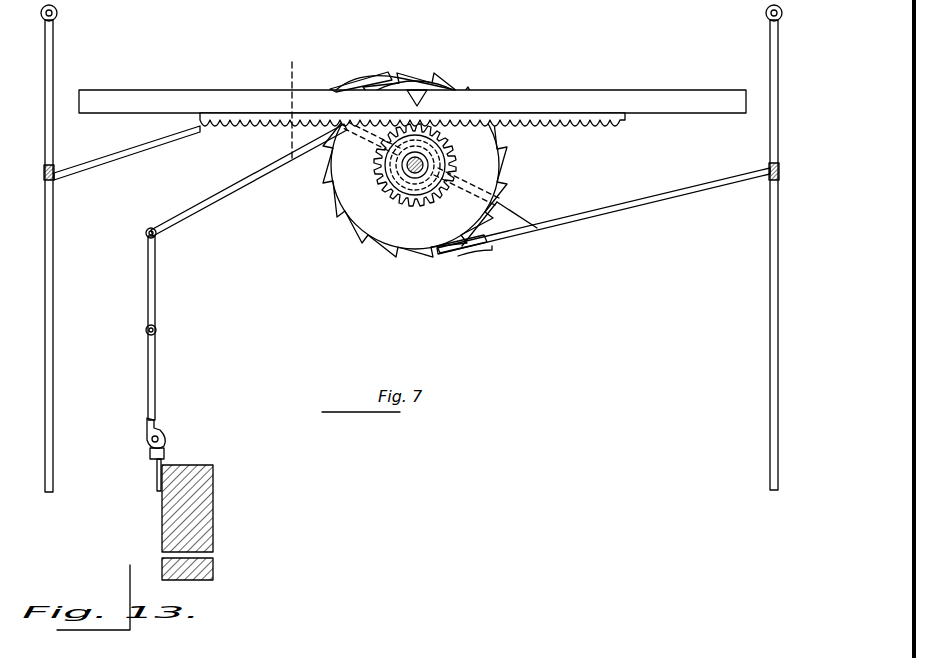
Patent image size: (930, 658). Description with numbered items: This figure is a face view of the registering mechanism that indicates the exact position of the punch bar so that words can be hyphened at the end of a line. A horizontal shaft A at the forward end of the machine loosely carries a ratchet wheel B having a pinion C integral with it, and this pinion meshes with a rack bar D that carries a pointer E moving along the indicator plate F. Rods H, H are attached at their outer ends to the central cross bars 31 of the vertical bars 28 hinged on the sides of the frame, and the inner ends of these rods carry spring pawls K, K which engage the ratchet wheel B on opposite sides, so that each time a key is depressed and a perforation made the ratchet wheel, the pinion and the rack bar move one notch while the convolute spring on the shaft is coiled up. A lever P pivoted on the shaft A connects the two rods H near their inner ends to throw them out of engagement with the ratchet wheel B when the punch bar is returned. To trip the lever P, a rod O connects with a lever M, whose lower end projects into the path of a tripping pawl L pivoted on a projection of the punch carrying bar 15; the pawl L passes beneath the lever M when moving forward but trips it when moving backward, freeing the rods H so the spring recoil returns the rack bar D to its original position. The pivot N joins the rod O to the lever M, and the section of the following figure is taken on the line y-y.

The lever P is at (415, 165).
The pinion C is at (407, 194).
The horizontal shaft A is at (423, 165).
The ratchet wheel B is at (500, 202).
The indicator plate F is at (568, 90).
The rack bar D is at (572, 127).
The spring pawls K is at (380, 75).
The pointer E is at (428, 92).
The section line y- y is at (288, 103).
The vertical bars 28 is at (45, 360).
The central cross bars 31 is at (43, 172).
The rods H is at (125, 155).
The rod O is at (237, 190).
The pivot N is at (157, 328).
The lever M is at (156, 378).
The tripping pawl L is at (160, 428).
The punch carrying bar 15 is at (214, 510).